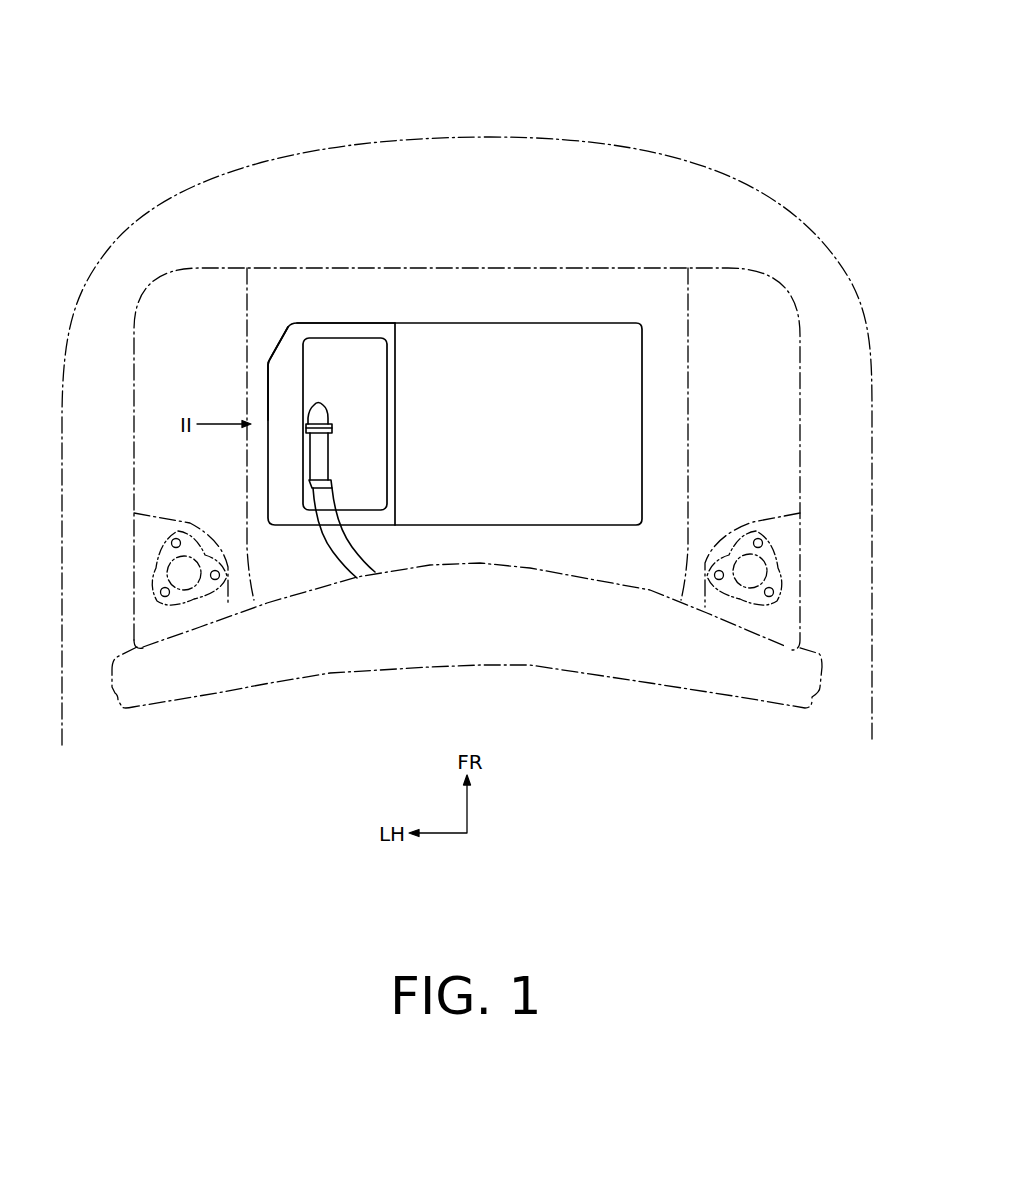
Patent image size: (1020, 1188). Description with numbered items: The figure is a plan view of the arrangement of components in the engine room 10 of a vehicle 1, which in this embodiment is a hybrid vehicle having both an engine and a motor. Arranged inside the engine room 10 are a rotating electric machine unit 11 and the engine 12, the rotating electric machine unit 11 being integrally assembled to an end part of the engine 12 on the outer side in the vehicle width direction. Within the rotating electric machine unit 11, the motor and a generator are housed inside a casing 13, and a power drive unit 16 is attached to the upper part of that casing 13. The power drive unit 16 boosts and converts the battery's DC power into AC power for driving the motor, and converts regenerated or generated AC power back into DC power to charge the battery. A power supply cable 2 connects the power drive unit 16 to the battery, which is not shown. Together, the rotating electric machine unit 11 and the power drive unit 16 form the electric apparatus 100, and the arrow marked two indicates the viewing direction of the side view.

The vehicle 1 is at (657, 123).
The power supply cable 2 is at (342, 558).
The engine room 10 is at (745, 308).
The rotating electric machine unit 11 is at (307, 538).
The engine 12 is at (562, 518).
The casing 13 is at (267, 387).
The power drive unit 16 is at (306, 328).
The electric apparatus 100 is at (355, 312).